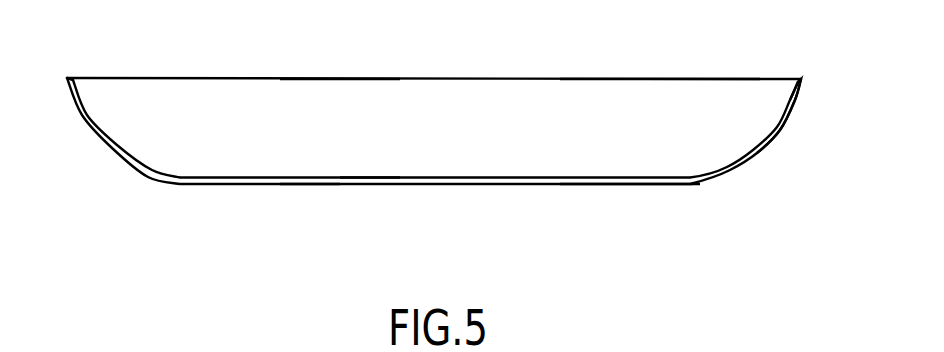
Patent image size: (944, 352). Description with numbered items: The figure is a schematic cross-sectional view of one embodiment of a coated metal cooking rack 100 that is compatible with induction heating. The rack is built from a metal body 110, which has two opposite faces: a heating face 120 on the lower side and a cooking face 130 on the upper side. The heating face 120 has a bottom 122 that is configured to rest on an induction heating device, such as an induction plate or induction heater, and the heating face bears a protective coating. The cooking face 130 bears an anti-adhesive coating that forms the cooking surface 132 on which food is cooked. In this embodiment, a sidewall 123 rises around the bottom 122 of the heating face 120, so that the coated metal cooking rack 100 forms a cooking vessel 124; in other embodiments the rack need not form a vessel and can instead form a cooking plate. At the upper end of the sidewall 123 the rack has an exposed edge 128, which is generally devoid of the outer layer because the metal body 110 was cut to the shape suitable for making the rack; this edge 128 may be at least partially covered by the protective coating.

The coated metal cooking rack 100 is at (228, 198).
The metal body 110 is at (653, 185).
The heating face 120 is at (323, 184).
The bottom 122 is at (357, 184).
The sidewall 123 is at (777, 130).
The cooking vessel 124 is at (662, 93).
The exposed edge 128 is at (801, 78).
The cooking face 130 is at (322, 178).
The cooking surface 132 is at (357, 178).